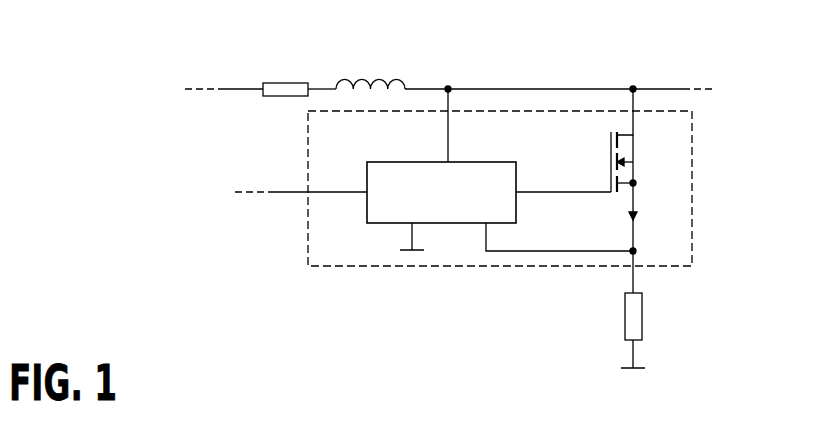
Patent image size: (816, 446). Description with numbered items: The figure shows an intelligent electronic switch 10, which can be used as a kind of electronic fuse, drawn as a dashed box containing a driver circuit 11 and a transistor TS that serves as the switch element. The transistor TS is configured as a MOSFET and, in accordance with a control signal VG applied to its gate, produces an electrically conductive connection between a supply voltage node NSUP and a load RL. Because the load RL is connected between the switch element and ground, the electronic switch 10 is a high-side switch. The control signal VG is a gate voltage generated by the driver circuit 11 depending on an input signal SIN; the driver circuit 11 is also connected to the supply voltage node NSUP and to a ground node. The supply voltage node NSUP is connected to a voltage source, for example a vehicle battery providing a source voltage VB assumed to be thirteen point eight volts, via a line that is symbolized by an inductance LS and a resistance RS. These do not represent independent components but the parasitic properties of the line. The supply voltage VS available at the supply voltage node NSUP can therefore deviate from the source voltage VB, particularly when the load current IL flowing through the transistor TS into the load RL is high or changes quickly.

The electronic switch 10 is at (463, 191).
The driver circuit 11 is at (519, 162).
The source voltage VB is at (221, 72).
The resistance RS is at (285, 71).
The inductance LS is at (370, 68).
The supply voltage node NSUP is at (449, 87).
The supply voltage VS is at (641, 74).
The input signal SIN is at (301, 179).
The control signal VG is at (563, 177).
The transistor TS is at (641, 140).
The load current IL is at (646, 214).
The load RL is at (668, 329).